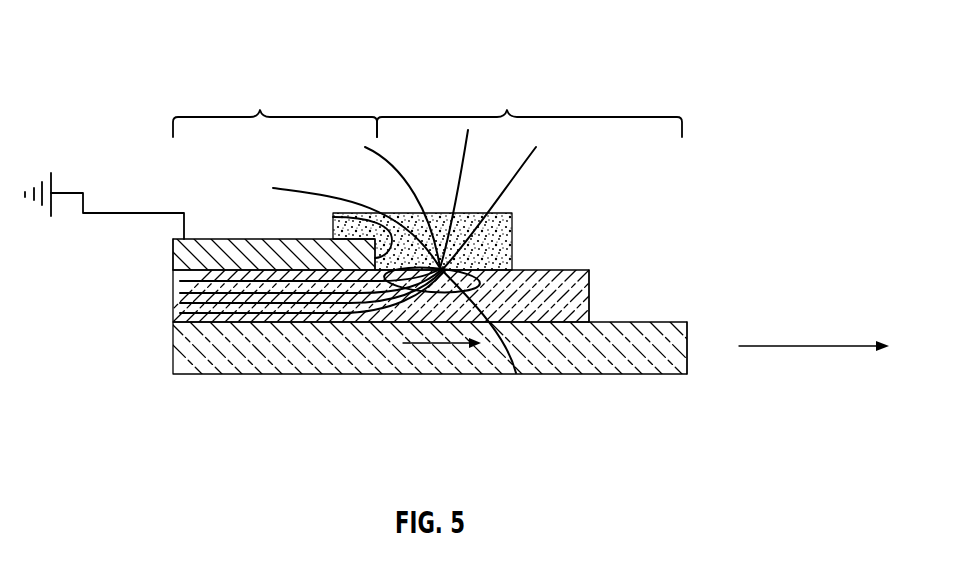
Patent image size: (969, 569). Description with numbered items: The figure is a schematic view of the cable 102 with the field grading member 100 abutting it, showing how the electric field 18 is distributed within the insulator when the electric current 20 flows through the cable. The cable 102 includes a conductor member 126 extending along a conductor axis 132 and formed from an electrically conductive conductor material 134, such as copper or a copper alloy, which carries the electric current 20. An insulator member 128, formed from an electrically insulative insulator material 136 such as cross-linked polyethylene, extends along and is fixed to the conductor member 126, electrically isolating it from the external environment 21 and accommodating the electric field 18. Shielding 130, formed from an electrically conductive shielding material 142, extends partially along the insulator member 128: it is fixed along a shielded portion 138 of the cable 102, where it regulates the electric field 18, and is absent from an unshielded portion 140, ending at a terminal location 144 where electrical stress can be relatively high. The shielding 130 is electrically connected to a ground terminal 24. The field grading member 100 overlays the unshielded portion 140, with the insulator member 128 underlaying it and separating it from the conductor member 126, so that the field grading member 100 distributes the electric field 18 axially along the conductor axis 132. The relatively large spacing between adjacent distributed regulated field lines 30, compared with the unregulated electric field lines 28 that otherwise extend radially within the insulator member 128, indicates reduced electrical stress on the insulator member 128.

The external environment 21 is at (178, 38).
The shielded portion 138 is at (275, 105).
The unshielded portion 140 is at (529, 105).
The shielding material 142 is at (256, 245).
The terminal location 144 is at (333, 217).
The electric field 18 is at (450, 190).
The field grading member 100 is at (505, 214).
The unregulated electric field lines 28 is at (502, 260).
The insulator member 128 is at (590, 295).
The insulator material 136 is at (573, 311).
The shielding 130 is at (183, 255).
The ground terminal 24 is at (52, 205).
The conductor material 134 is at (243, 345).
The electric current 20 is at (421, 344).
The distributed regulated field lines 30 is at (516, 373).
The conductor member 126 is at (690, 338).
The conductor axis 132 is at (803, 347).
The cable 102 is at (210, 402).